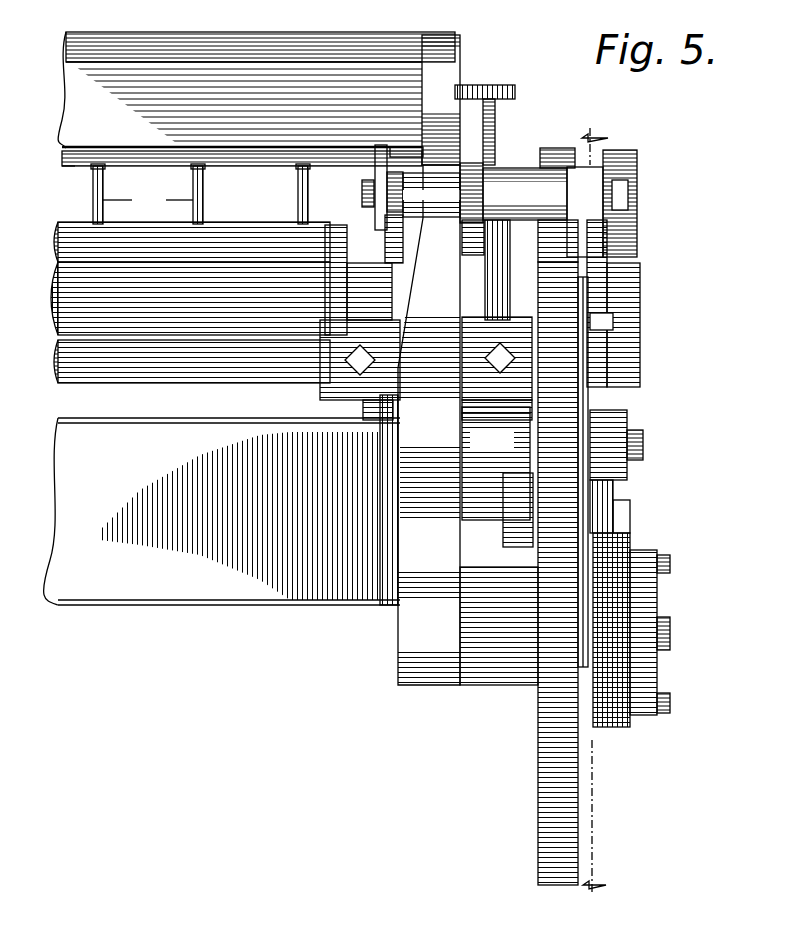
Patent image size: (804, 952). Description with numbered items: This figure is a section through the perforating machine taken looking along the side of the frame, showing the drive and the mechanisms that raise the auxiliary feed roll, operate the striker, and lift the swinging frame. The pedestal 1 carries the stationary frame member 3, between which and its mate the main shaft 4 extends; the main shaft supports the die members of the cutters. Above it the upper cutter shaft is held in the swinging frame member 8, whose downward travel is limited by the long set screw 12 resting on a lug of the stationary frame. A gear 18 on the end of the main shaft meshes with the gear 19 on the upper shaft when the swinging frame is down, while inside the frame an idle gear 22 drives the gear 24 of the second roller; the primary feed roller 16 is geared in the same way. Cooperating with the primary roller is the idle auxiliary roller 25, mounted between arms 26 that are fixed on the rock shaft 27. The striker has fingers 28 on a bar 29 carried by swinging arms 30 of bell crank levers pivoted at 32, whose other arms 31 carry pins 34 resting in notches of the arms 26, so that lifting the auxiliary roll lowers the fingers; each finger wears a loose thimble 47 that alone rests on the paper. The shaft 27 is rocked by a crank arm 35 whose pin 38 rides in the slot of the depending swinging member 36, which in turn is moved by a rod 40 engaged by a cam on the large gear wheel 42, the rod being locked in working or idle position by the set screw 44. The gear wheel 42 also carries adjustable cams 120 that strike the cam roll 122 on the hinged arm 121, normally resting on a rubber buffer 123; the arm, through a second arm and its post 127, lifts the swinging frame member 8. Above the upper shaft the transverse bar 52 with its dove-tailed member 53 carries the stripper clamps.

The pedestal 1 is at (222, 500).
The frame member 3 is at (412, 603).
The main shaft 4 is at (595, 513).
The swinging frame member 8 is at (441, 100).
The set screw 12 is at (486, 105).
The roller 16 is at (64, 282).
The gear 18 is at (602, 322).
The gear 19 is at (550, 148).
The idle gear 22 is at (394, 408).
The gear 24 is at (385, 282).
The roller 25 is at (60, 226).
The arm 26 is at (345, 296).
The shaft 27 is at (62, 355).
The finger 28 is at (192, 169).
The bar 29 is at (62, 167).
The swinging arm 30 is at (405, 151).
The arm 31 is at (385, 214).
The pivot 32 is at (361, 186).
The pin 34 is at (352, 262).
The crank arm 35 is at (527, 310).
The swinging member 36 is at (628, 210).
The pin 38 is at (594, 266).
The rod 40 is at (588, 402).
The gear wheel 42 is at (540, 762).
The set screw 44 is at (616, 322).
The thimble 47 is at (148, 200).
The transverse bar 52 is at (242, 116).
The dove-tailed member 53 is at (172, 58).
The cam 120 is at (612, 502).
The arm 121 is at (514, 462).
The cam roll 122 is at (616, 436).
The rubber buffer 123 is at (509, 535).
The post 127 is at (507, 263).